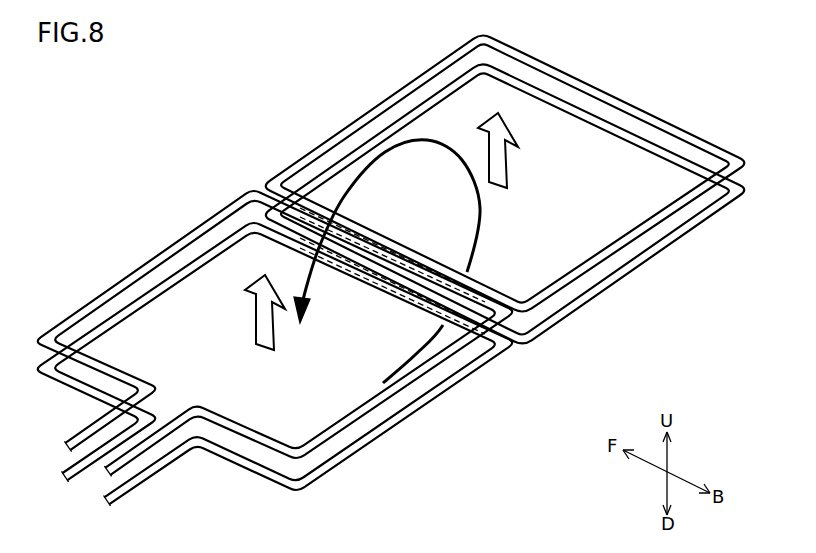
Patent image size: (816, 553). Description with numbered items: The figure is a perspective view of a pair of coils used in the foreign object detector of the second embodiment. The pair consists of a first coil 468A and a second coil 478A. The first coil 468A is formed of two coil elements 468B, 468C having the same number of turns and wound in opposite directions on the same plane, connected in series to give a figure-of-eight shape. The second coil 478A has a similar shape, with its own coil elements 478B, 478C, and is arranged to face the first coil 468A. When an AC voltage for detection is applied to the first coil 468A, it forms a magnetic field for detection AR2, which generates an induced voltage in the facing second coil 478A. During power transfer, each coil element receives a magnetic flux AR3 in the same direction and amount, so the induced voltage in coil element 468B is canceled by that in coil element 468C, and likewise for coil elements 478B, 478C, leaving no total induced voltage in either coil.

The second coil 478A is at (315, 75).
The coil element 478B is at (183, 245).
The coil element 478C is at (367, 117).
The first coil 468A is at (668, 330).
The coil element 468B is at (400, 430).
The coil element 468C is at (592, 295).
The magnetic field for detection AR2 is at (482, 237).
The magnetic flux AR3 is at (507, 166).